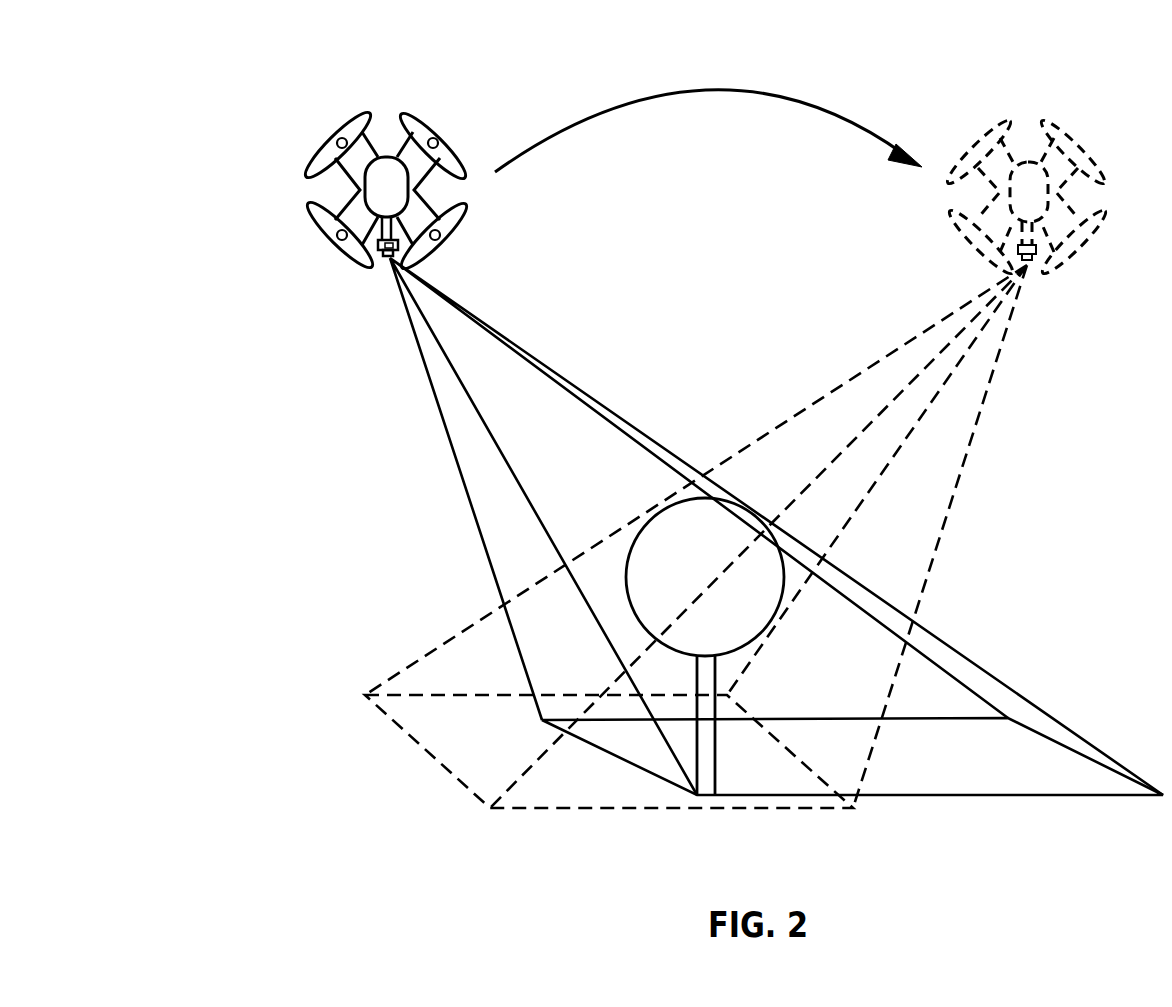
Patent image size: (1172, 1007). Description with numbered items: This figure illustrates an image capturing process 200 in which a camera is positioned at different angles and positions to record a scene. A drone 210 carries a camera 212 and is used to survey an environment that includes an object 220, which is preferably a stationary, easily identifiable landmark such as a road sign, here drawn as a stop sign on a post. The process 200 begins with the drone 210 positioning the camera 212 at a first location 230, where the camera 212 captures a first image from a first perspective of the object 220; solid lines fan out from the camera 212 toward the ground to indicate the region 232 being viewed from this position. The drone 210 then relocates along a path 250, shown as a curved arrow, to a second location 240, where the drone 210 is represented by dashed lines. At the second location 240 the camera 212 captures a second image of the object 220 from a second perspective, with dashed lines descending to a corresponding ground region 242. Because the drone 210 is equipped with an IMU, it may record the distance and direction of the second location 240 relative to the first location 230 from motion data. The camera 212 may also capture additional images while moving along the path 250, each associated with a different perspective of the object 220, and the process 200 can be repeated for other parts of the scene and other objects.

The image capturing process 200 is at (178, 772).
The drone 210 is at (305, 183).
The camera 212 is at (385, 262).
The object 220 is at (640, 522).
The first location 230 is at (272, 243).
The ground area captured at first position 232 is at (1036, 797).
The second location 240 is at (1106, 262).
The ground area captured at second position 242 is at (395, 722).
The path 250 is at (745, 93).